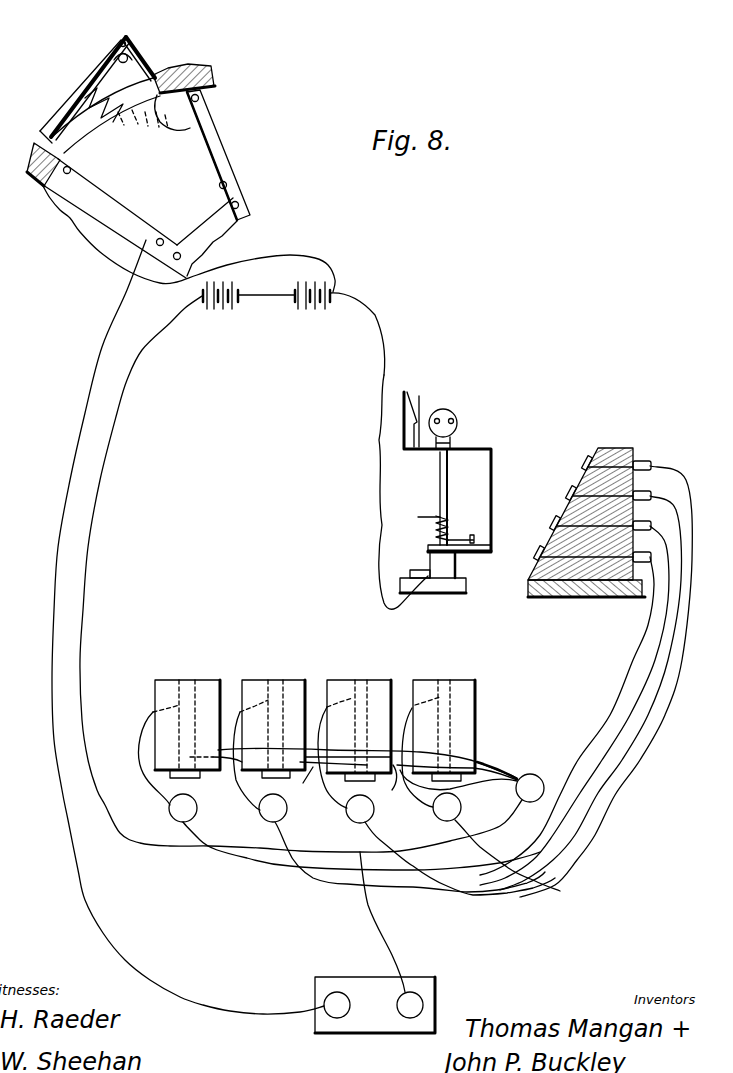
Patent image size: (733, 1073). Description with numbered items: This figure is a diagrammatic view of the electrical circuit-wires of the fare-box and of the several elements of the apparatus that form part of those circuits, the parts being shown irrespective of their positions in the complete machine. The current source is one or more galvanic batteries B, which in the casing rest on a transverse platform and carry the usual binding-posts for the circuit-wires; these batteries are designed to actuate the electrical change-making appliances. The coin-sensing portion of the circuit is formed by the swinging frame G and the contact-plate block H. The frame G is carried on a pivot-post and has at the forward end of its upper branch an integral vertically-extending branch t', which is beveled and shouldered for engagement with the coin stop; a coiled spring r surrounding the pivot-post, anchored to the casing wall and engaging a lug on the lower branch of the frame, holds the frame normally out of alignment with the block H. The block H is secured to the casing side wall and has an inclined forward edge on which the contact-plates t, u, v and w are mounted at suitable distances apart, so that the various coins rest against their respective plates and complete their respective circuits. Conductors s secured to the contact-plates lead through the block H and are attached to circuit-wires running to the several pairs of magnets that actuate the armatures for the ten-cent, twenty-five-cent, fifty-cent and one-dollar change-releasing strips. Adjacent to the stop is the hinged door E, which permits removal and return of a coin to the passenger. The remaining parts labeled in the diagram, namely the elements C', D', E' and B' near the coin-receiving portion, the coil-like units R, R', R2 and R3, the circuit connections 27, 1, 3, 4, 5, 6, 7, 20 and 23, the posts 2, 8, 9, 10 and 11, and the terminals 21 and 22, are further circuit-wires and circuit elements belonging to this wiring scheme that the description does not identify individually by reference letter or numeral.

The frame arm C' is at (133, 88).
The plate D' is at (115, 96).
The electrode contact E' is at (126, 117).
The bracket bars B' is at (152, 184).
The conductor wire 27 is at (79, 230).
The galvanic battery B is at (294, 328).
The conductor wire 1 is at (376, 477).
The swinging frame G is at (491, 484).
The vertically-extending branch t' is at (432, 419).
The hinged door E is at (446, 497).
The coiled spring r is at (450, 529).
The contact-plate block H is at (620, 449).
The conductor s is at (645, 555).
The contact-plate t is at (583, 460).
The contact-plate u is at (567, 488).
The contact-plate v is at (551, 519).
The contact-plate w is at (534, 551).
The relay coil R3 is at (211, 684).
The relay coil R2 is at (299, 683).
The relay coil R' is at (368, 718).
The relay coil R is at (457, 730).
The conductor wire 7 is at (136, 753).
The conductor wire 6 is at (262, 777).
The conductor wire 5 is at (335, 809).
The conductor wire 4 is at (495, 760).
The contact post 2 is at (537, 781).
The conductor wire 3 is at (82, 687).
The contact post 11 is at (191, 812).
The contact post 10 is at (287, 813).
The contact post 9 is at (373, 815).
The contact post 8 is at (463, 808).
The conductor wire 20 is at (63, 820).
The conductor wire 23 is at (386, 930).
The terminal 21 is at (349, 1003).
The terminal 22 is at (424, 1005).